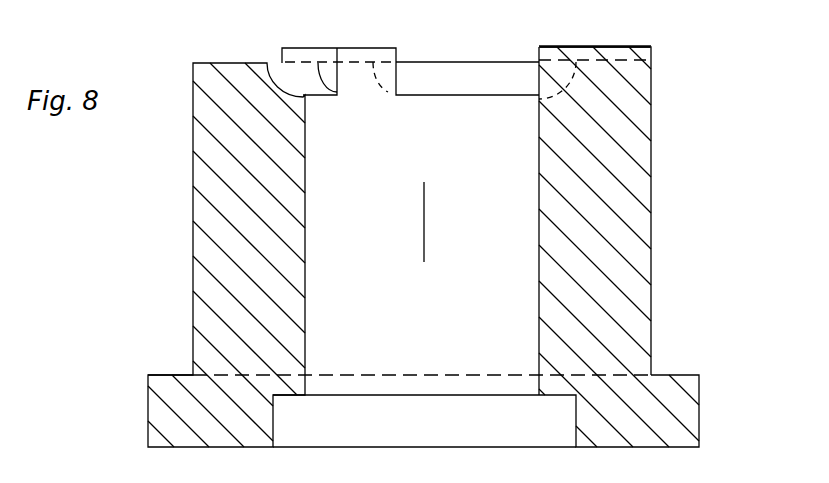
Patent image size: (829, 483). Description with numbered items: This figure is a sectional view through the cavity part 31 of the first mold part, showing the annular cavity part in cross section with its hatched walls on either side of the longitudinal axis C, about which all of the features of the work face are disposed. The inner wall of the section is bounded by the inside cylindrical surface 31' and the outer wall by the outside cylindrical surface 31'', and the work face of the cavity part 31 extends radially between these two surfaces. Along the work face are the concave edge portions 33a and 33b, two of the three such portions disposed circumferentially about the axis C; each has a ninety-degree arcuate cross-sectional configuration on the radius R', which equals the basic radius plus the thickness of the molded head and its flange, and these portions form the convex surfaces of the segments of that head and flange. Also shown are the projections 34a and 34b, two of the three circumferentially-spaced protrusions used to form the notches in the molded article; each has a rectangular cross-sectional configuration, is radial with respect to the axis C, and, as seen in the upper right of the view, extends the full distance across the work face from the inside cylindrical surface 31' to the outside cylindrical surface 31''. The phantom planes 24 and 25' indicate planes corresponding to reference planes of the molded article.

The cavity part 31 is at (404, 255).
The inside cylindrical surface 31' is at (556, 33).
The outside cylindrical surface 31'' is at (626, 247).
The concave edge portion 33a is at (290, 82).
The concave edge portion 33b is at (468, 78).
The projection 34a is at (348, 47).
The projection 34b is at (620, 47).
The plane 25' is at (624, 41).
The plane 24 is at (655, 60).
The radius R' is at (636, 93).
The longitudinal axis c is at (424, 218).